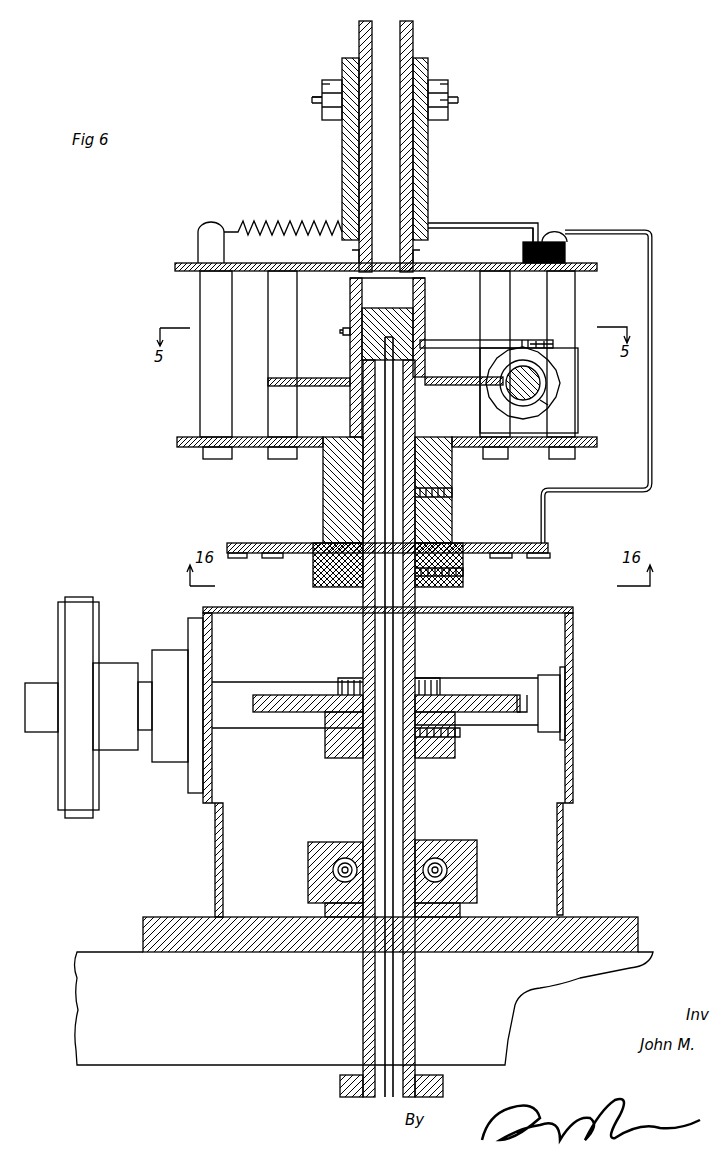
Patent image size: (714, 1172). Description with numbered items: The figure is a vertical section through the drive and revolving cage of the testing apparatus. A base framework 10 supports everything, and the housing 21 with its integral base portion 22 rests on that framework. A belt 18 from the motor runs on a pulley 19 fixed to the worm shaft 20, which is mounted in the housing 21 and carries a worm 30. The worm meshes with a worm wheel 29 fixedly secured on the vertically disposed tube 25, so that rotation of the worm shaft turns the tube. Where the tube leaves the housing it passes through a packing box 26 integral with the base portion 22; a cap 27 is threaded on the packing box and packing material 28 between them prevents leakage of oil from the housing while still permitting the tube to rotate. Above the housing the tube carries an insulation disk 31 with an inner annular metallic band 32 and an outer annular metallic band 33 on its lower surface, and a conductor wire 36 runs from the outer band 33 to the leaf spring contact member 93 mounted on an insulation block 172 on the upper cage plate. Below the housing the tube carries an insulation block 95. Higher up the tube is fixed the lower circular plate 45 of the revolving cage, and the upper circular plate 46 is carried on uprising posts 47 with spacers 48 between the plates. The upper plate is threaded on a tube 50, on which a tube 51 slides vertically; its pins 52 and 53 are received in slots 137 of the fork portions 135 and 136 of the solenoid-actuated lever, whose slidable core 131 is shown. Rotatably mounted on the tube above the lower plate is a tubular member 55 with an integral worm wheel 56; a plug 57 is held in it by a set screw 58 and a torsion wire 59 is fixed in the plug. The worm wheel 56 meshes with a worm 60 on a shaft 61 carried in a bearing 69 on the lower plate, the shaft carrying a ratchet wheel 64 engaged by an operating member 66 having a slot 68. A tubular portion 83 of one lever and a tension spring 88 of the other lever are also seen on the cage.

The base framework 10 is at (364, 1008).
The belt 18 is at (78, 818).
The pulley 19 is at (58, 806).
The worm shaft 20 is at (270, 728).
The housing 21 is at (213, 833).
The base portion 22 is at (578, 917).
The tube 25 is at (413, 818).
The packing box 26 is at (335, 903).
The cap 27 is at (478, 858).
The packing material 28 is at (355, 850).
The worm wheel 29 is at (500, 725).
The worm 30 is at (435, 678).
The insulation disk 31 is at (470, 543).
The inner annular metallic band 32 is at (272, 556).
The outer annular metallic band 33 is at (238, 557).
The conductor wire 36 is at (653, 470).
The lower circular plate 45 is at (463, 452).
The upper circular plate 46 is at (452, 262).
The uprising posts 47 is at (270, 263).
The spacers 48 is at (575, 302).
The tube 50 is at (414, 30).
The tube 51 is at (428, 175).
The pin 52 is at (318, 110).
The pin 53 is at (458, 100).
The tubular member 55 is at (425, 416).
The worm wheel 56 is at (320, 386).
The plug 57 is at (400, 335).
The set screw 58 is at (340, 332).
The torsion wire 59 is at (425, 381).
The worm 60 is at (513, 410).
The shaft 61 is at (556, 378).
The ratchet wheel 64 is at (550, 400).
The operating member 66 is at (470, 340).
The slot 68 is at (540, 344).
The bearing 69 is at (578, 367).
The tubular portion 83 is at (198, 248).
The tension spring 88 is at (290, 222).
The leaf spring contact member 93 is at (532, 222).
The insulation block 95 is at (340, 1082).
The slidable core 131 is at (312, 100).
The fork portion 135 is at (322, 93).
The fork portion 136 is at (448, 88).
The slot 137 is at (448, 100).
The insulation block 172 is at (567, 250).